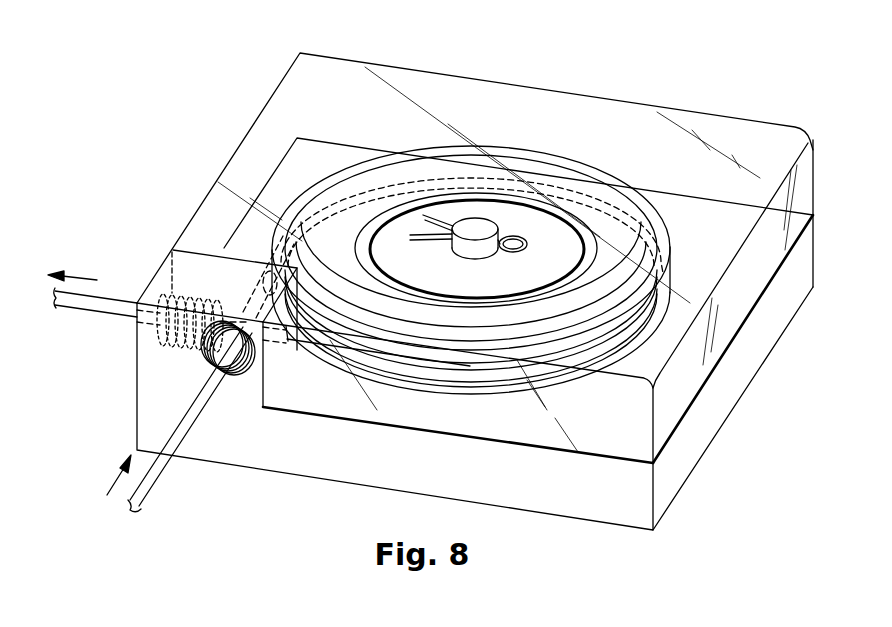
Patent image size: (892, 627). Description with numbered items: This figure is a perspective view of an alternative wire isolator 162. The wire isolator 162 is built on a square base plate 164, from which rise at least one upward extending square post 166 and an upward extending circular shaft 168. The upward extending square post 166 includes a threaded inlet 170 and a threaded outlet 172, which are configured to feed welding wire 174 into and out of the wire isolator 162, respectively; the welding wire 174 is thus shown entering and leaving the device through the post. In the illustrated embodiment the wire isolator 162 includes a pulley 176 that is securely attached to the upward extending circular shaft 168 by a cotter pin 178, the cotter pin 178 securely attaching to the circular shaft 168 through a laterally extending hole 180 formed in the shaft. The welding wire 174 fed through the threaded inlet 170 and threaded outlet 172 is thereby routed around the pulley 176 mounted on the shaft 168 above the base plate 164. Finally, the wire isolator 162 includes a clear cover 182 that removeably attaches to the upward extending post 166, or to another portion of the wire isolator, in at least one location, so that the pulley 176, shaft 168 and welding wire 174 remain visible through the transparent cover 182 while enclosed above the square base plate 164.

The wire isolator 162 is at (190, 70).
The square base plate 164 is at (395, 452).
The upward extending square post 166 is at (202, 265).
The upward extending circular shaft 168 is at (480, 222).
The threaded inlet 170 is at (232, 372).
The threaded outlet 172 is at (143, 322).
The welding wire 174 is at (108, 296).
The pulley 176 is at (577, 183).
The cotter pin 178 is at (513, 252).
The laterally extending hole 180 is at (496, 243).
The clear cover 182 is at (725, 128).